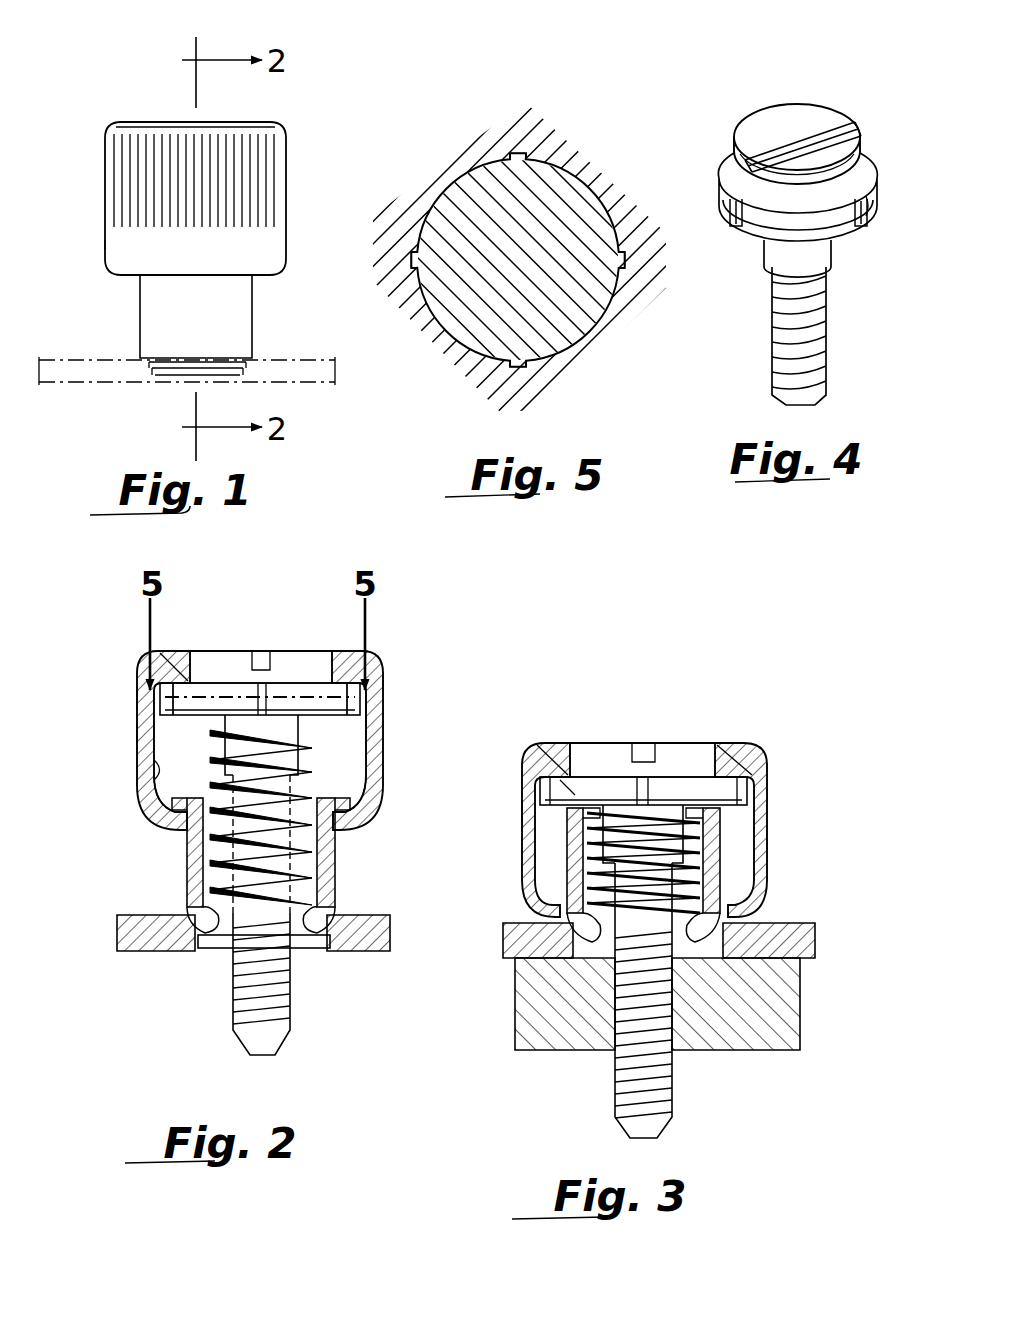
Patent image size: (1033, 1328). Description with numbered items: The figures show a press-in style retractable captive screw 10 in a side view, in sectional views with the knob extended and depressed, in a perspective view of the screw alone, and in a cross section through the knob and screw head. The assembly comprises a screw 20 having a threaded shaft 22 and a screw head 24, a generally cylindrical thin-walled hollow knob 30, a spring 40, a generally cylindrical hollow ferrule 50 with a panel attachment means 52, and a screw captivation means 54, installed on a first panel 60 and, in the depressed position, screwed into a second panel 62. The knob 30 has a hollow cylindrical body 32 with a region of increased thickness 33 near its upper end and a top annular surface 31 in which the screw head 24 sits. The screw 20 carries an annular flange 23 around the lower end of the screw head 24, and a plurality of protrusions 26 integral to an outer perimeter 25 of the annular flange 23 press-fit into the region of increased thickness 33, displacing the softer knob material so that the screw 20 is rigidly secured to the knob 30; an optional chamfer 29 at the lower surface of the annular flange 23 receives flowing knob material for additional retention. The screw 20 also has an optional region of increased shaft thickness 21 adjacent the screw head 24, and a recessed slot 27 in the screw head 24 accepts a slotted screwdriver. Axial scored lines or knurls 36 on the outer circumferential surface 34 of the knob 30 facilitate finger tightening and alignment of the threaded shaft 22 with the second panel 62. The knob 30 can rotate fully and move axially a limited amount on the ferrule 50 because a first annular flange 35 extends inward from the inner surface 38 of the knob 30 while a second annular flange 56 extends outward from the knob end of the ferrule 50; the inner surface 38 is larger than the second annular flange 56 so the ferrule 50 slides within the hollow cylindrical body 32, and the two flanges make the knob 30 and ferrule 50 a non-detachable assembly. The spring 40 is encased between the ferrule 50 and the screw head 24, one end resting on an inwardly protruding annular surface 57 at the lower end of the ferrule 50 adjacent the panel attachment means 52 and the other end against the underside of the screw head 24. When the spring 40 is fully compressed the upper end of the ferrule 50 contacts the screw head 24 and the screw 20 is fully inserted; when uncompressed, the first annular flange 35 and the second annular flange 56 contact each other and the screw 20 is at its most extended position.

In FIG. 1, the retractable captive screw 10 is at (305, 120).
In FIG. 2, the retractable captive screw 10 is at (393, 662).
In FIG. 3, the retractable captive screw 10 is at (757, 725).
In FIG. 4, the screw 20 is at (811, 210).
In FIG. 2, the screw 20 is at (265, 809).
In FIG. 3, the screw 20 is at (650, 874).
In FIG. 4, the region of increased shaft thickness 21 is at (790, 256).
In FIG. 2, the region of increased shaft thickness 21 is at (261, 745).
In FIG. 3, the region of increased shaft thickness 21 is at (643, 834).
In FIG. 4, the threaded shaft 22 is at (822, 276).
In FIG. 2, the threaded shaft 22 is at (292, 990).
In FIG. 3, the threaded shaft 22 is at (675, 1086).
In FIG. 4, the annular flange 23 is at (870, 169).
In FIG. 2, the annular flange 23 is at (260, 699).
In FIG. 3, the annular flange 23 is at (643, 791).
In FIG. 5, the screw head 24 is at (480, 212).
In FIG. 4, the screw head 24 is at (851, 137).
In FIG. 2, the screw head 24 is at (261, 623).
In FIG. 3, the screw head 24 is at (651, 703).
In FIG. 4, the outer perimeter 25 is at (868, 198).
In FIG. 5, the protrusions 26 is at (526, 150).
In FIG. 4, the protrusions 26 is at (735, 228).
In FIG. 2, the protrusions 26 is at (265, 697).
In FIG. 4, the recessed slot 27 is at (800, 140).
In FIG. 2, the recessed slot 27 is at (263, 651).
In FIG. 3, the recessed slot 27 is at (641, 745).
In FIG. 3, the chamfer 29 is at (564, 792).
In FIG. 1, the knob 30 is at (138, 245).
In FIG. 2, the knob 30 is at (270, 711).
In FIG. 3, the knob 30 is at (675, 771).
In FIG. 2, the top annular surface 31 is at (169, 672).
In FIG. 3, the top annular surface 31 is at (731, 760).
In FIG. 2, the hollow cylindrical body 32 is at (150, 731).
In FIG. 5, the region of increased thickness 33 is at (620, 171).
In FIG. 2, the region of increased thickness 33 is at (387, 672).
In FIG. 3, the region of increased thickness 33 is at (549, 757).
In FIG. 1, the outer circumferential surface 34 is at (201, 180).
In FIG. 2, the outer circumferential surface 34 is at (140, 696).
In FIG. 3, the outer circumferential surface 34 is at (522, 792).
In FIG. 2, the first annular flange 35 is at (352, 825).
In FIG. 3, the first annular flange 35 is at (542, 907).
In FIG. 1, the knurls 36 is at (168, 172).
In FIG. 2, the inner surface 38 is at (152, 771).
In FIG. 2, the spring 40 is at (312, 745).
In FIG. 3, the spring 40 is at (586, 964).
In FIG. 1, the ferrule 50 is at (240, 318).
In FIG. 2, the ferrule 50 is at (255, 865).
In FIG. 3, the ferrule 50 is at (716, 846).
In FIG. 1, the panel attachment means 52 is at (168, 376).
In FIG. 2, the panel attachment means 52 is at (222, 953).
In FIG. 3, the panel attachment means 52 is at (737, 906).
In FIG. 2, the screw captivation means 54 is at (176, 826).
In FIG. 2, the second annular flange 56 is at (348, 782).
In FIG. 2, the annular surface 57 is at (198, 897).
In FIG. 1, the first panel 60 is at (310, 380).
In FIG. 2, the first panel 60 is at (378, 938).
In FIG. 3, the first panel 60 is at (792, 940).
In FIG. 3, the second panel 62 is at (776, 1006).